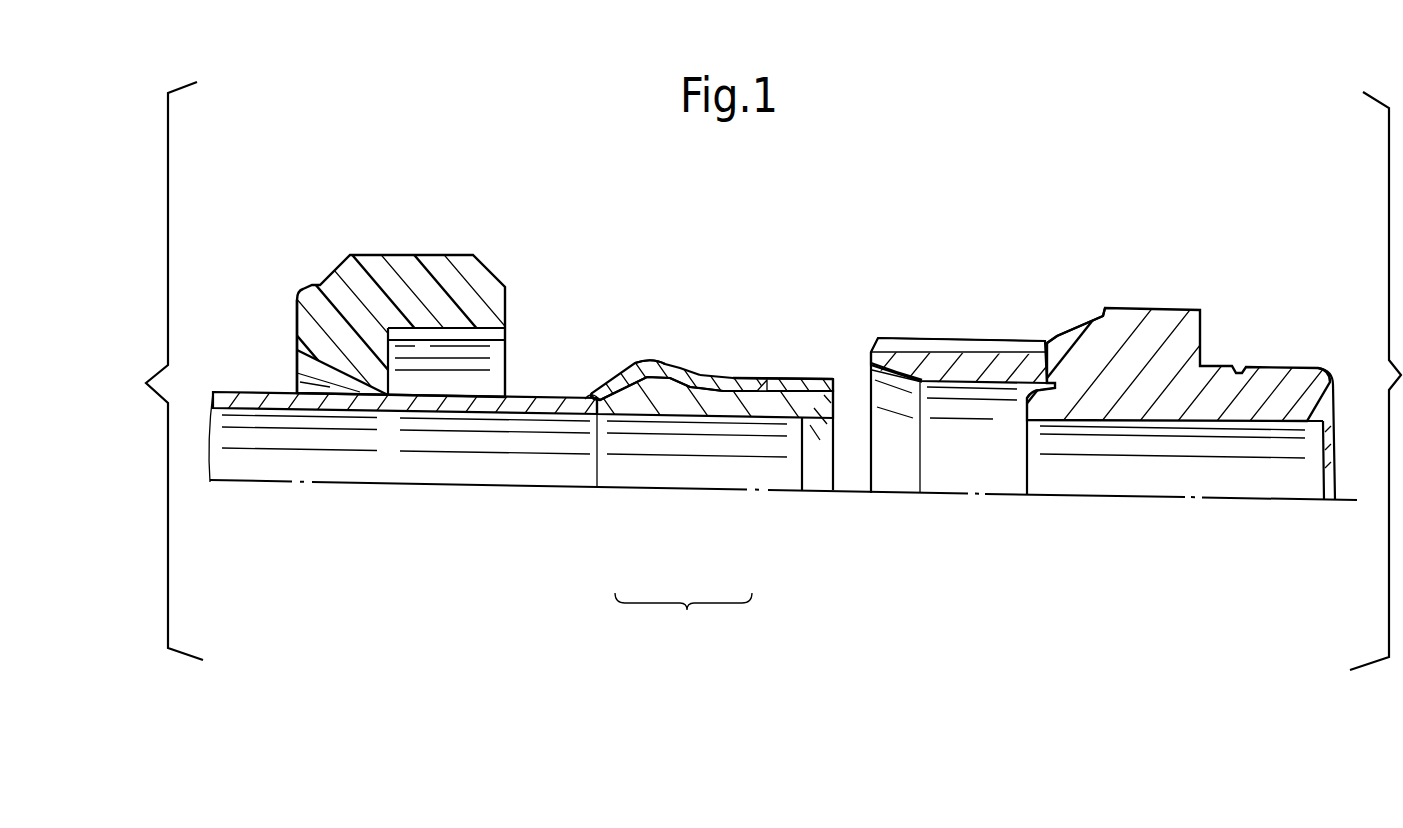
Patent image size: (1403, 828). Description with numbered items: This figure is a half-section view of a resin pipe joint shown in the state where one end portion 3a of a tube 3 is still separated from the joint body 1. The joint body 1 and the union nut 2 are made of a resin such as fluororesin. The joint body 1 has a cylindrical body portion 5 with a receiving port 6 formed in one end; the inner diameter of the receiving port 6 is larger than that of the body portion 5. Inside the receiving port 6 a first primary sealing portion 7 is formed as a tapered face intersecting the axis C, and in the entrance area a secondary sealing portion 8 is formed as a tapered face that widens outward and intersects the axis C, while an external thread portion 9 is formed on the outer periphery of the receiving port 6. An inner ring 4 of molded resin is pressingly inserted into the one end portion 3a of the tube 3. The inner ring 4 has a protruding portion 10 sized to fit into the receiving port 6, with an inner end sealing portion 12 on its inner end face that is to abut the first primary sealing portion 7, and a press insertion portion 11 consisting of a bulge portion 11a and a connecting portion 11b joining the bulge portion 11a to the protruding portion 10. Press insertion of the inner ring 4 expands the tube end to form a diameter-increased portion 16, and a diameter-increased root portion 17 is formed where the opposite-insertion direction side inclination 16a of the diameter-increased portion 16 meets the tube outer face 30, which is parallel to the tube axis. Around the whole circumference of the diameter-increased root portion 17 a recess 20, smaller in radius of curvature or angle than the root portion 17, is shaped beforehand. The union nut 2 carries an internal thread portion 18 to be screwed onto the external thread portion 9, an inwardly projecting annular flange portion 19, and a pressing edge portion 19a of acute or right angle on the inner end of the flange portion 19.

The joint body 1 is at (1164, 303).
The union nut 2 is at (371, 248).
The tube 3 is at (233, 382).
The one end portion of the tube 3a is at (733, 390).
The inner ring 4 is at (783, 370).
The body portion 5 is at (1122, 313).
The receiving port 6 is at (907, 352).
The first primary sealing portion 7 is at (1038, 388).
The secondary sealing portion 8 is at (873, 379).
The external thread portion 9 is at (977, 341).
The protruding portion 10 is at (785, 424).
The press insertion portion 11 is at (715, 509).
The bulge portion 11a is at (655, 410).
The connecting portion 11b is at (737, 405).
The inner end sealing portion 12 is at (823, 405).
The diameter-increased portion 16 is at (675, 366).
The opposite-insertion direction side inclination 16a is at (648, 361).
The diameter-increased root portion 17 is at (600, 399).
The internal thread portion 18 is at (425, 345).
The flange portion 19 is at (297, 332).
The pressing edge portion 19a is at (390, 412).
The recess 20 is at (595, 396).
The tube outer face 30 is at (527, 394).
The axis C is at (1352, 498).